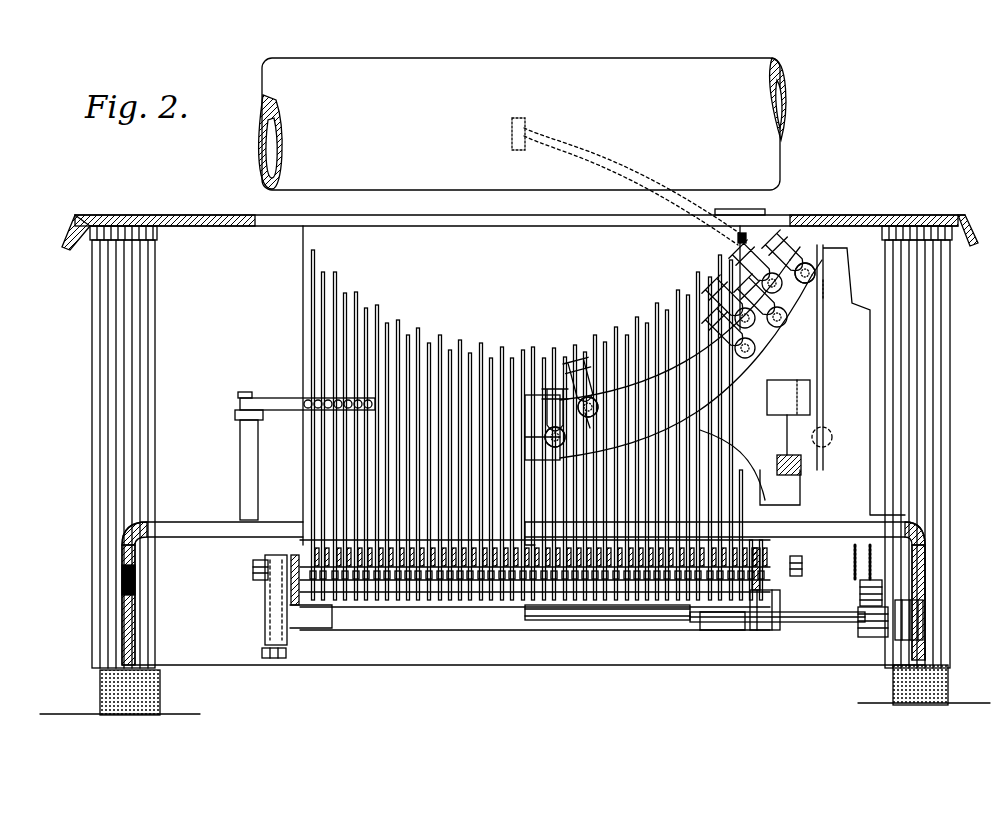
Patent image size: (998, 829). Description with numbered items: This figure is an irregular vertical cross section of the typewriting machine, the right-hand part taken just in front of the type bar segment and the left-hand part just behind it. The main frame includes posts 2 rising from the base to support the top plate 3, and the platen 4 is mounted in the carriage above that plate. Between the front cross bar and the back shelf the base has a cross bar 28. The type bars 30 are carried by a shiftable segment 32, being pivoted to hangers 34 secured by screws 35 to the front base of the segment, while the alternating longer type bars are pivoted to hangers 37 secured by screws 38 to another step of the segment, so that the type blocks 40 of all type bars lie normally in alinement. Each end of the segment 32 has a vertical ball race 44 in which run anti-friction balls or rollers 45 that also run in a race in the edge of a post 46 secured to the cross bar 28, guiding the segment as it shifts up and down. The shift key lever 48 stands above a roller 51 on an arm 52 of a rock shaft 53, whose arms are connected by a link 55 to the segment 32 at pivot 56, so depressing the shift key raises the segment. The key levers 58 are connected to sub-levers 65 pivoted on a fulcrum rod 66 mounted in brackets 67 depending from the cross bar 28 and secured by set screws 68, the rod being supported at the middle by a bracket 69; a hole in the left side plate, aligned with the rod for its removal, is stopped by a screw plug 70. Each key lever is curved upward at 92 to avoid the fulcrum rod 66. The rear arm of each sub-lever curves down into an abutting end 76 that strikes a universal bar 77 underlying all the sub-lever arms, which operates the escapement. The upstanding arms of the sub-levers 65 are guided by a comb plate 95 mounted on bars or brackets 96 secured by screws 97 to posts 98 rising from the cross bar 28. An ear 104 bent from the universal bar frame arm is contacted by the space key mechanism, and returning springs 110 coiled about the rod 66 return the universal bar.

The posts 2 is at (150, 300).
The top plate 3 is at (840, 216).
The platen 4 is at (430, 60).
The cross bar 28 is at (187, 522).
The type bars 30 is at (746, 237).
The shiftable segment 32 is at (668, 360).
The hangers 34 is at (788, 248).
The screws 35 is at (816, 266).
The hangers 37 is at (596, 404).
The screws 38 is at (596, 429).
The type blocks 40 is at (517, 152).
The vertical ball race 44 is at (805, 345).
The anti-friction balls or rollers 45 is at (823, 300).
The post 46 is at (851, 309).
The lever 48 is at (871, 556).
The roller 51 is at (877, 588).
The arm 52 is at (859, 612).
The rock shaft 53 is at (825, 627).
The link 55 is at (758, 467).
The pivot 56 is at (802, 478).
The key levers 58 is at (340, 548).
The sub-levers 65 is at (312, 280).
The fulcrum rod 66 is at (253, 572).
The brackets 67 is at (265, 614).
The set screws 68 is at (275, 659).
The bracket 69 is at (526, 600).
The screw plug 70 is at (135, 578).
The abutting end 76 is at (363, 600).
The universal bar 77 is at (535, 589).
The upward curve 92 is at (525, 520).
The comb plate 95 is at (271, 398).
The bars or brackets 96 is at (236, 412).
The screws 97 is at (245, 392).
The posts 98 is at (258, 441).
The ear 104 is at (320, 629).
The returning springs 110 is at (291, 556).